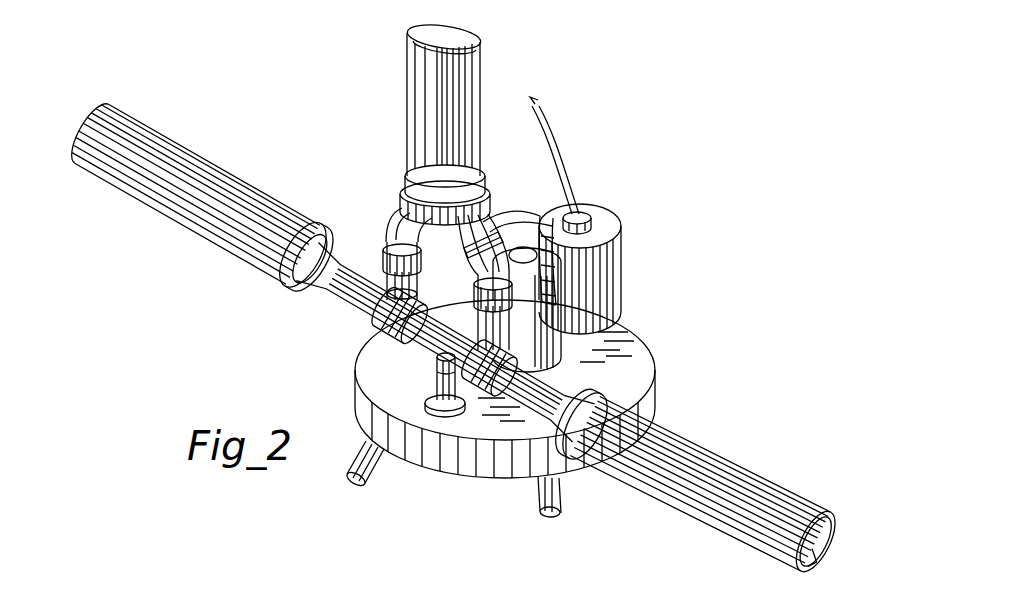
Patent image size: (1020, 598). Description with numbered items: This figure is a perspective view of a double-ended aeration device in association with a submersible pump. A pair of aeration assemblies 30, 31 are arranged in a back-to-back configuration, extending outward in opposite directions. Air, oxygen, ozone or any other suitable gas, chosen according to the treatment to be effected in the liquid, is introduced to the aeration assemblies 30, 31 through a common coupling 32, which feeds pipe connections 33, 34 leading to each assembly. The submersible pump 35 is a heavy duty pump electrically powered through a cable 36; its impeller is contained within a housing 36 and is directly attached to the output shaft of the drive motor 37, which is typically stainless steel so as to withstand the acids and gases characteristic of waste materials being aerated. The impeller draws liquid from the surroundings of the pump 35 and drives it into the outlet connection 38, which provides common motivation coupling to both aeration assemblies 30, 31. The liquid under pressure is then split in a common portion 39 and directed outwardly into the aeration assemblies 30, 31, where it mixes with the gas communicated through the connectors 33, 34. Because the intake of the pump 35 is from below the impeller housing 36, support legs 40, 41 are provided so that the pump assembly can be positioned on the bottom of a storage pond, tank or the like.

The aeration assembly 30 is at (253, 157).
The aeration assembly 31 is at (734, 440).
The common coupling 32 is at (477, 70).
The pipe connection 33 is at (383, 195).
The pipe connection 34 is at (484, 213).
The submersible pump 35 is at (626, 221).
The cable 36 is at (560, 163).
The drive motor 37 is at (565, 352).
The outlet connection 38 is at (457, 404).
The common portion 39 is at (421, 350).
The support leg 40 is at (372, 474).
The support leg 41 is at (560, 498).